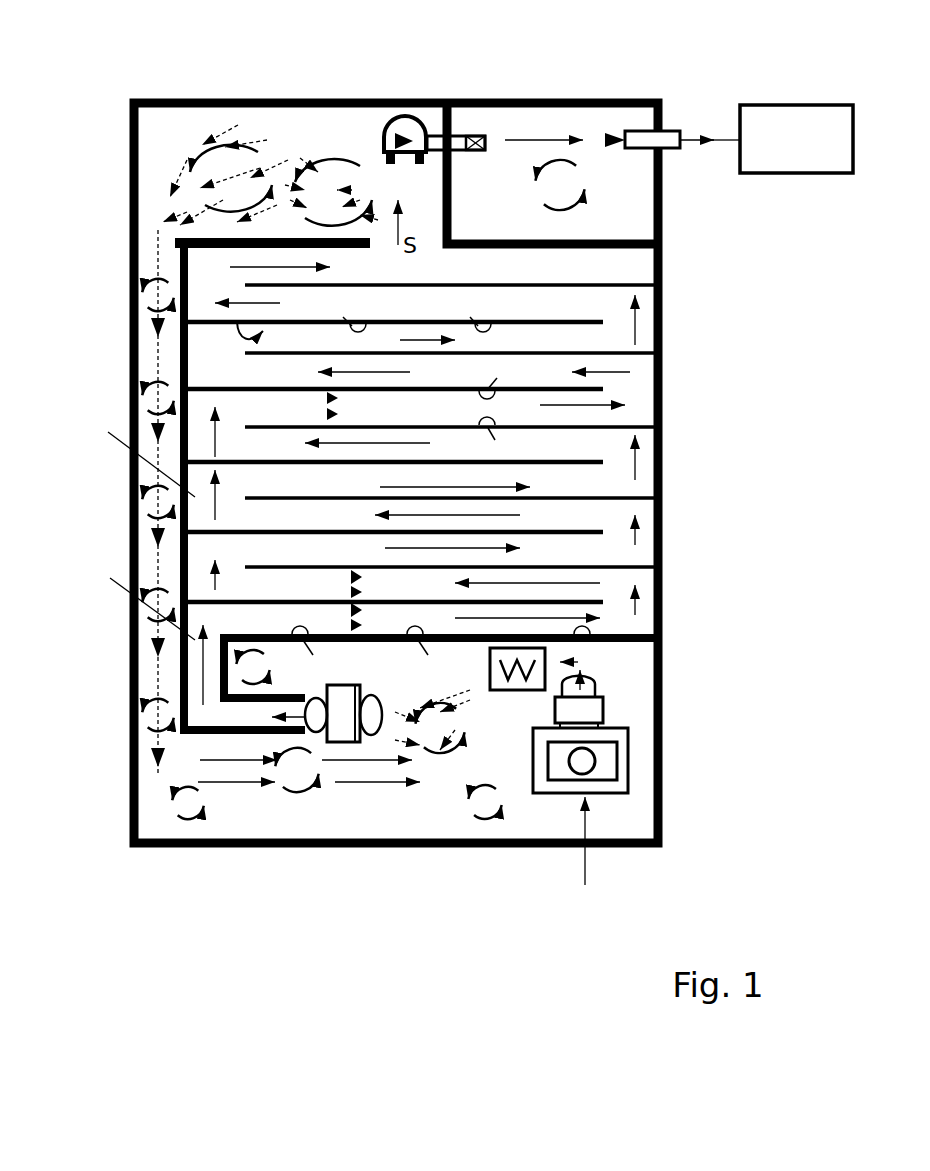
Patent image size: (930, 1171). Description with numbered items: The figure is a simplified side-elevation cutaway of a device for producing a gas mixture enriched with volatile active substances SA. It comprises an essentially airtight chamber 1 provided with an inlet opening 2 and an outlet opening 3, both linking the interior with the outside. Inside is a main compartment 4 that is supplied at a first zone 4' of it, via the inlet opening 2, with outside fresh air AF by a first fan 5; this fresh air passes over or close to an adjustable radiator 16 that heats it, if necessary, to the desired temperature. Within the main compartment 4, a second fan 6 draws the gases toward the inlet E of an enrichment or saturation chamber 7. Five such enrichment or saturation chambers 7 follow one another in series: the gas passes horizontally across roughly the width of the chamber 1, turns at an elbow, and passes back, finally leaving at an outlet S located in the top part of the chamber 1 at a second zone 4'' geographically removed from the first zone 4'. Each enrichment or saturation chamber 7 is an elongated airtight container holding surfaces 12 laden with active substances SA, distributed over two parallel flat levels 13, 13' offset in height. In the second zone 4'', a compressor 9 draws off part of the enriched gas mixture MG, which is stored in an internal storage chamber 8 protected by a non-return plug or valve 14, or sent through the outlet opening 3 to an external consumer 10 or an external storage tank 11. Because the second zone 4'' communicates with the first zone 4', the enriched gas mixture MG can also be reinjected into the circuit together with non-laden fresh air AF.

The airtight chamber 1 is at (197, 100).
The inlet opening 2 is at (597, 760).
The outlet opening 3 is at (672, 136).
The main compartment 4 is at (242, 529).
The first zone of the main compartment 4' is at (454, 757).
The second zone of the main compartment 4'' is at (262, 171).
The first fan 5 is at (585, 711).
The second fan 6 is at (347, 727).
The enrichment or saturation chamber 7 is at (663, 322).
The internal storage chamber 8 is at (620, 180).
The compressor 9 is at (398, 117).
The consumer 10 is at (796, 139).
The external storage tank 11 is at (796, 139).
The surface laden with active substances 12 is at (237, 322).
The first level 13 is at (395, 474).
The second level 13' is at (451, 441).
The non-return plug or valve 14 is at (488, 152).
The adjustable radiator 16 is at (493, 690).